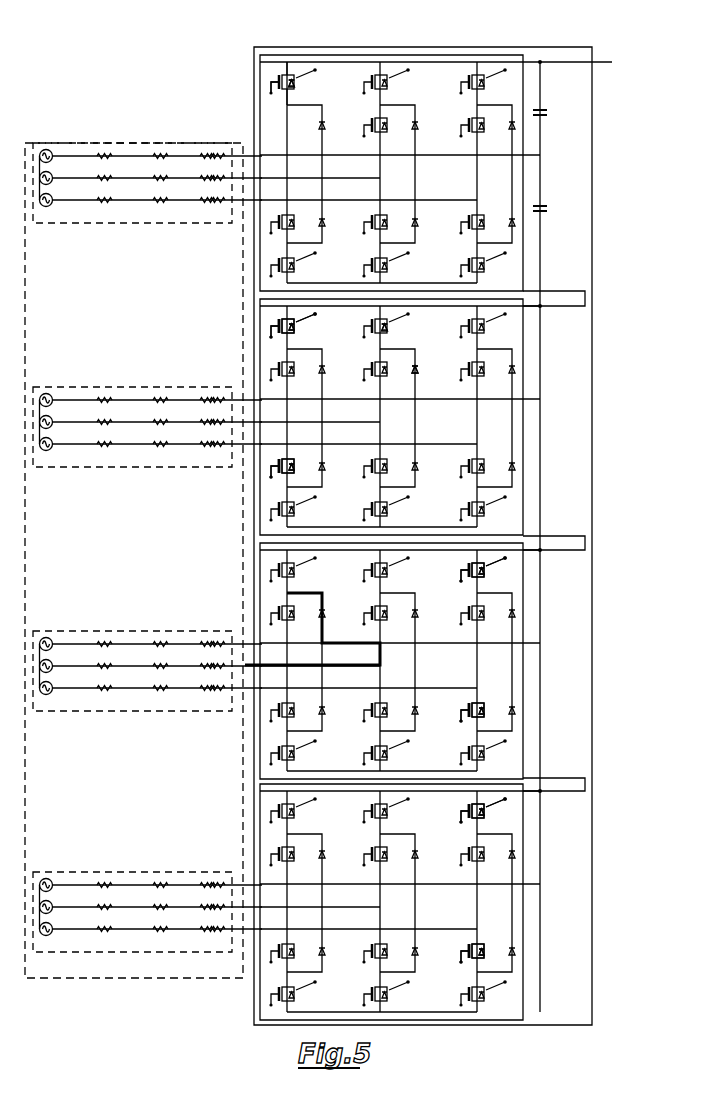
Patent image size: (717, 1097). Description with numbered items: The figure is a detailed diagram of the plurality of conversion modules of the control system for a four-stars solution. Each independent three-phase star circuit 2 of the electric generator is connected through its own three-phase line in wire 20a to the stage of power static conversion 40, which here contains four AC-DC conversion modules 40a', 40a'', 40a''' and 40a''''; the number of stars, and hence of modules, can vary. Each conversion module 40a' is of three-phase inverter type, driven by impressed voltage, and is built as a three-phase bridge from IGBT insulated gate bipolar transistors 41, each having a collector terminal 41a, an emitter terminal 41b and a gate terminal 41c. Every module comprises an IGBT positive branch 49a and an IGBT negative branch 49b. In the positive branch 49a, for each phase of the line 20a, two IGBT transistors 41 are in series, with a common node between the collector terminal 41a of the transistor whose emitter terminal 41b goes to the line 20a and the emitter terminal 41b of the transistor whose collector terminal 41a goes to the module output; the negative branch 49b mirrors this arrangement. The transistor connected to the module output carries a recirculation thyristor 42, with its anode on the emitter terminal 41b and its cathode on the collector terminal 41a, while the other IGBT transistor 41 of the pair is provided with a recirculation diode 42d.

The three-phase AC source winding 2 is at (136, 226).
The three-phase line 20a is at (245, 139).
The stage of power static conversion 40 is at (358, 47).
The AC-DC conversion module 40a' is at (385, 492).
The AC-DC conversion module 40a'' is at (425, 396).
The AC-DC conversion module 40a''' is at (420, 636).
The AC-DC conversion module 40a'''' is at (456, 902).
The IGBT insulated gate bipolar transistor 41 is at (282, 76).
The collector terminal 41a is at (292, 72).
The emitter terminal 41b is at (285, 92).
The gate terminal 41c is at (279, 84).
The recirculation thyristor 42 is at (301, 86).
The recirculation diode 42d is at (306, 122).
The IGBT positive branch 49a is at (549, 118).
The IGBT negative branch 49b is at (549, 212).